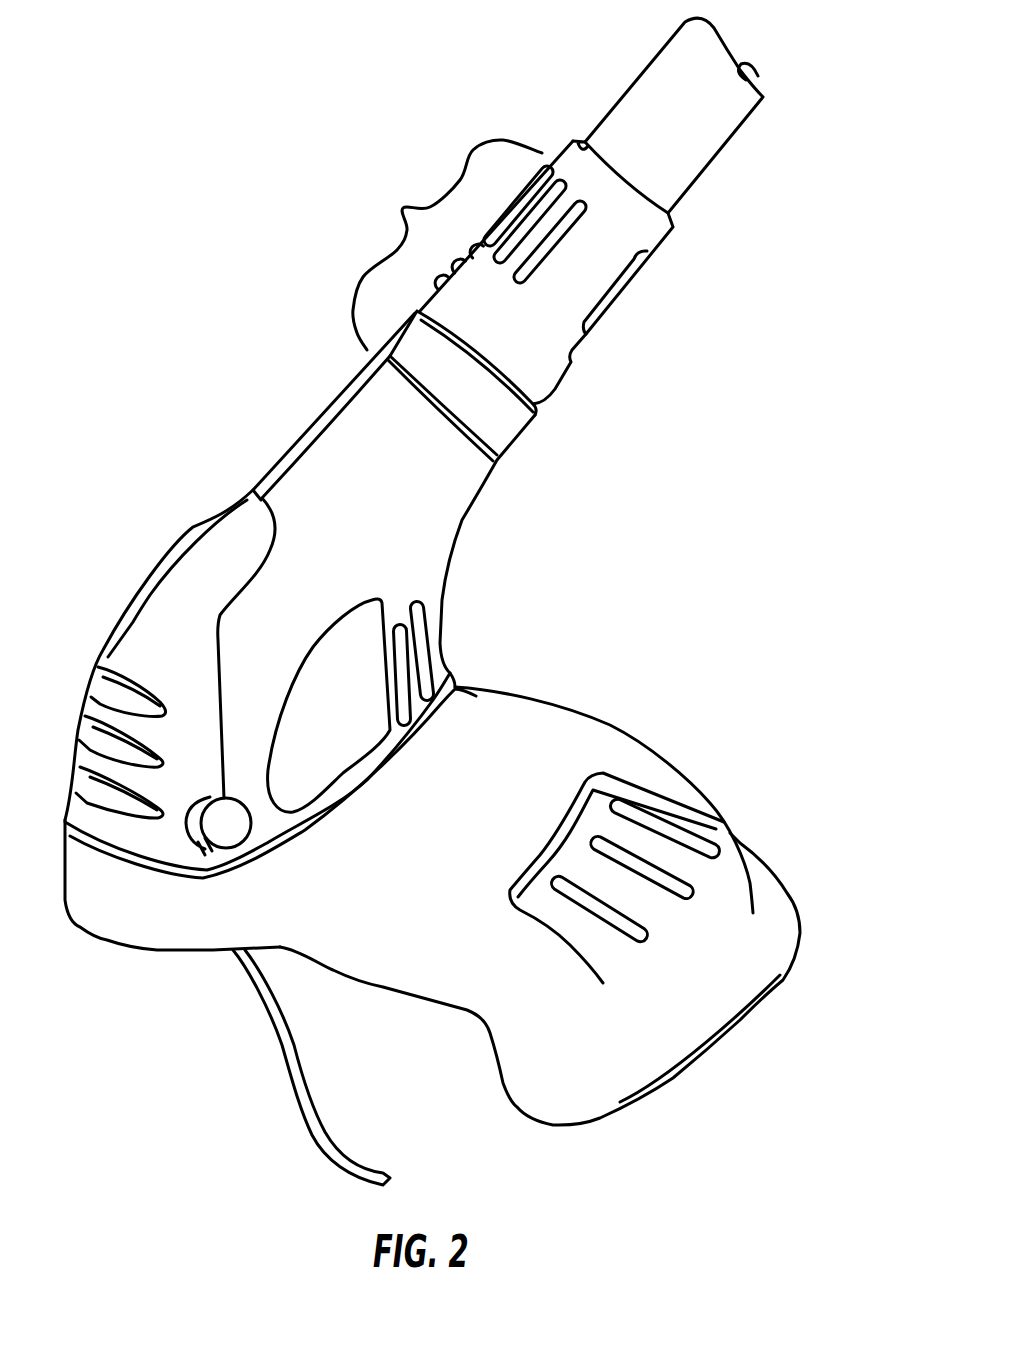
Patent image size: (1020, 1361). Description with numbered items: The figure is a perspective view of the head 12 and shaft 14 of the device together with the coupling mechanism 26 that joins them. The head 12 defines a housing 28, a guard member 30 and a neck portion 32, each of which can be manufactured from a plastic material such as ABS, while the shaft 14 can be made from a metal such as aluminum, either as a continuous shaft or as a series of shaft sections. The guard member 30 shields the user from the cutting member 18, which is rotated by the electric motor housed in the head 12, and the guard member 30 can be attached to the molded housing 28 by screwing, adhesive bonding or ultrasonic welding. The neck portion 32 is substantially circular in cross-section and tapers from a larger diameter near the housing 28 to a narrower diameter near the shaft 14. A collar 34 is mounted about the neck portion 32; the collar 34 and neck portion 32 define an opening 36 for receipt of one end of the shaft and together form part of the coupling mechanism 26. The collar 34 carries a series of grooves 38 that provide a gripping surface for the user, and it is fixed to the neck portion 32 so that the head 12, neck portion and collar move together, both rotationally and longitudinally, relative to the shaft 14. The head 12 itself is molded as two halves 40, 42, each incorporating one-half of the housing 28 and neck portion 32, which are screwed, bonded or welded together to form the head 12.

The head 12 is at (178, 545).
The shaft 14 is at (695, 119).
The cutting member 18 is at (287, 1080).
The coupling mechanism 26 is at (447, 245).
The housing 28 is at (183, 644).
The guard member 30 is at (515, 797).
The neck portion 32 is at (445, 478).
The collar 34 is at (585, 347).
The opening 36 is at (582, 147).
The grooves 38 is at (575, 205).
The first half of head 40 is at (300, 447).
The second half of head 42 is at (406, 539).